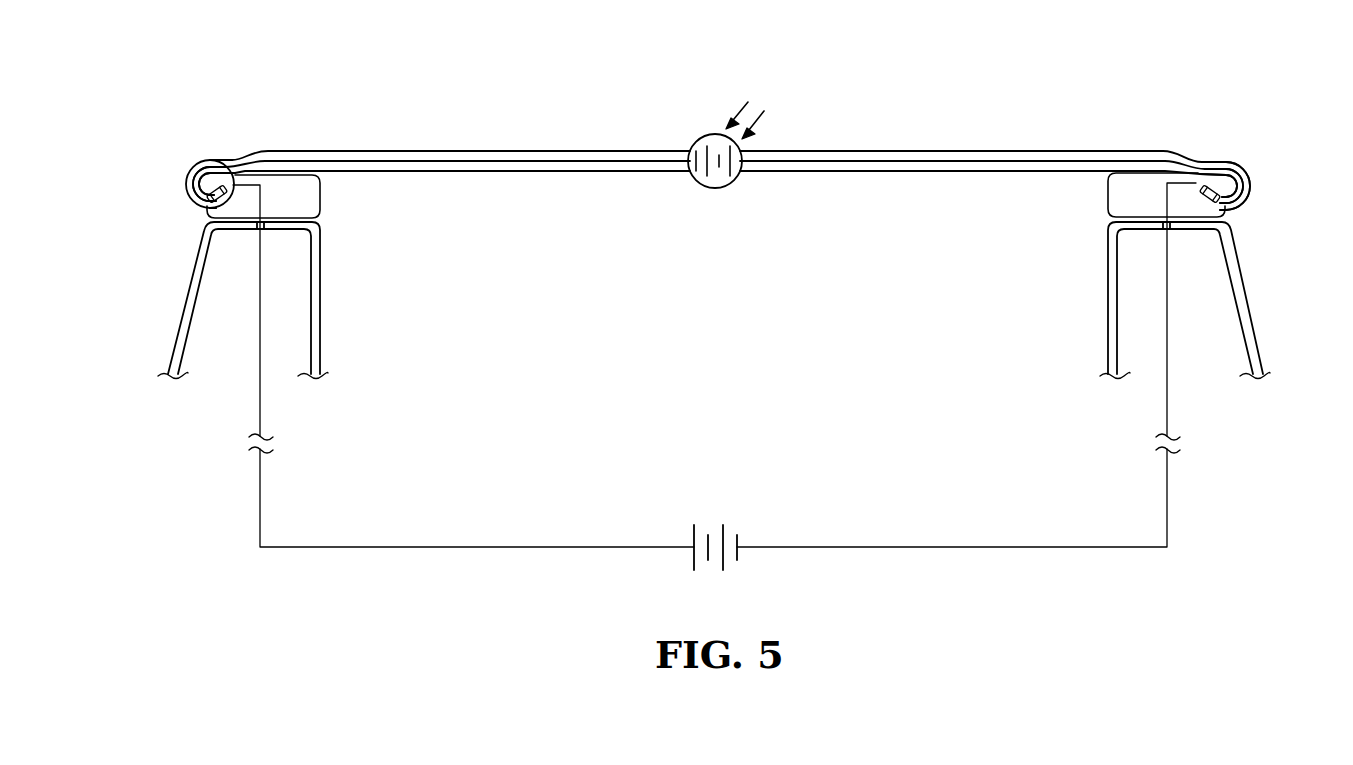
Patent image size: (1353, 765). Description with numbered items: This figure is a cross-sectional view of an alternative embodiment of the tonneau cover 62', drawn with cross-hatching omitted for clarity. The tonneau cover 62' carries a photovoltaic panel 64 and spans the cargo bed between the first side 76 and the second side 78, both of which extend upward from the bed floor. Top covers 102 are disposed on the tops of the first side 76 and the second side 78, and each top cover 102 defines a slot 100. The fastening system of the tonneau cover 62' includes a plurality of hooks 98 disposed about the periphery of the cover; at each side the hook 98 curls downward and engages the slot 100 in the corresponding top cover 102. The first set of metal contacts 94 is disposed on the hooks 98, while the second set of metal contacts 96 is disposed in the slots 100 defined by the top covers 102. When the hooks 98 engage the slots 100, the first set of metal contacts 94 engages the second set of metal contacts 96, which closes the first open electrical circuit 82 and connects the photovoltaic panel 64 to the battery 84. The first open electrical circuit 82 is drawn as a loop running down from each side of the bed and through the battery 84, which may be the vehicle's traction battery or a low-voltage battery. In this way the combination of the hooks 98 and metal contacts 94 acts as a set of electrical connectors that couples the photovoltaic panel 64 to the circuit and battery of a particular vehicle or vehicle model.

The tonneau cover 62' is at (721, 147).
The photovoltaic panel 64 is at (699, 135).
The first side 76 is at (321, 292).
The second side 78 is at (1107, 292).
The first open electrical circuit 82 is at (914, 549).
The battery 84 is at (692, 538).
The first set of metal contacts 94 is at (222, 200).
The second set of metal contacts 96 is at (198, 178).
The hooks 98 is at (200, 163).
The slots 100 is at (202, 216).
The top covers 102 is at (321, 196).